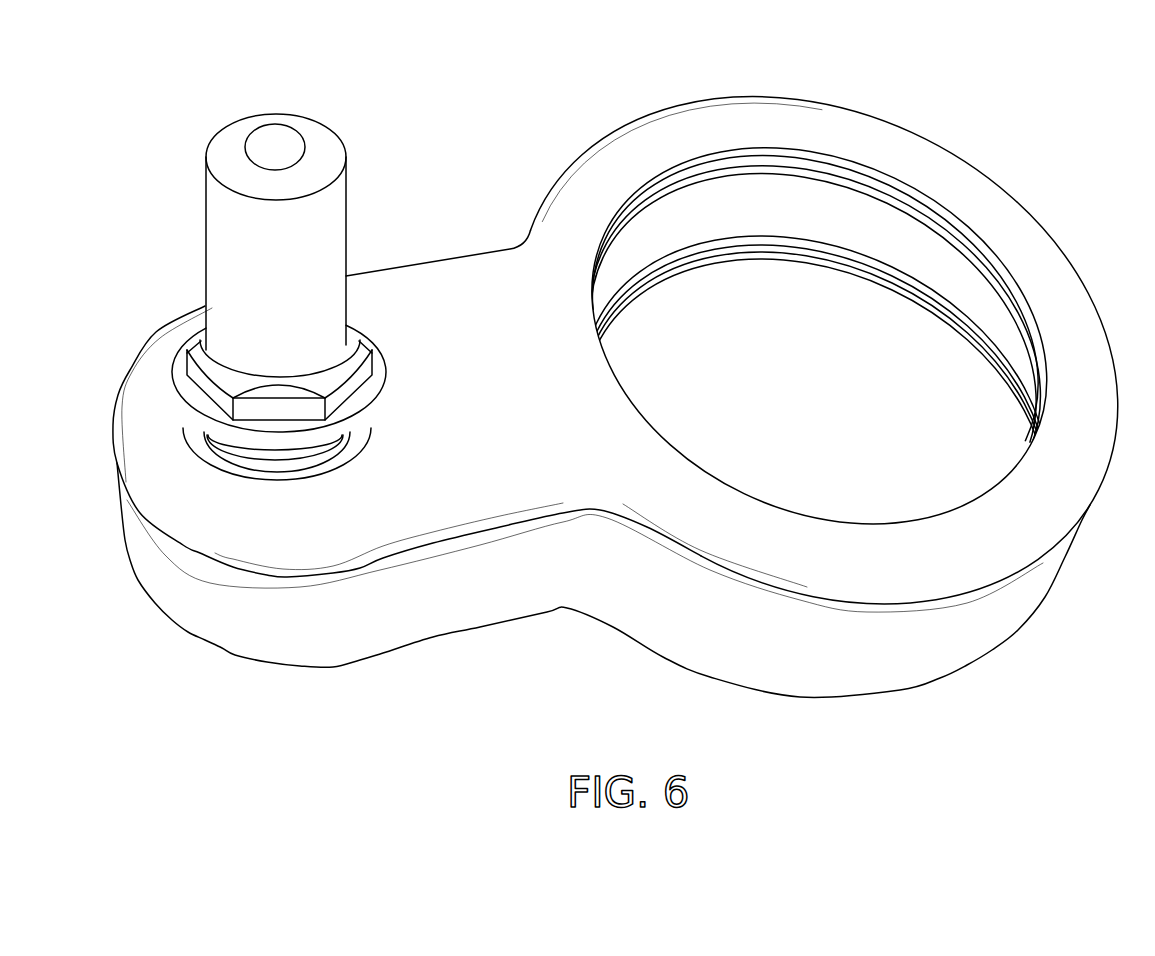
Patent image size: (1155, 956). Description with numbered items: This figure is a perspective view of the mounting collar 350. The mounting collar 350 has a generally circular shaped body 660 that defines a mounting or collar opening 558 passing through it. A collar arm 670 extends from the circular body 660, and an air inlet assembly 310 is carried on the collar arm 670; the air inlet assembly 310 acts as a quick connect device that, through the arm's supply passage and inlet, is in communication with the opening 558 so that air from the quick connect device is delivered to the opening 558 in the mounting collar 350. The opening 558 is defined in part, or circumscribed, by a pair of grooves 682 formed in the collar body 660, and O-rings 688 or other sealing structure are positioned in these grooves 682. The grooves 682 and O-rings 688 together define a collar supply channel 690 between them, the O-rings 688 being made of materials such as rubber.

The air inlet assembly 310 is at (205, 238).
The mounting collar 350 is at (632, 388).
The collar opening 558 is at (657, 292).
The circular body 660 is at (943, 580).
The collar arm 670 is at (517, 428).
The grooves 682 is at (772, 158).
The O-rings 688 is at (722, 150).
The collar supply channel 690 is at (982, 298).